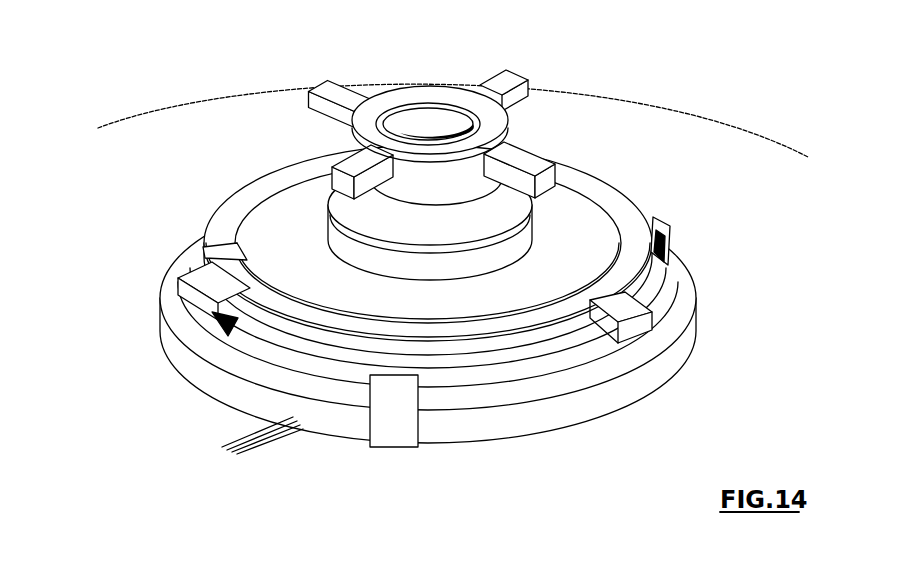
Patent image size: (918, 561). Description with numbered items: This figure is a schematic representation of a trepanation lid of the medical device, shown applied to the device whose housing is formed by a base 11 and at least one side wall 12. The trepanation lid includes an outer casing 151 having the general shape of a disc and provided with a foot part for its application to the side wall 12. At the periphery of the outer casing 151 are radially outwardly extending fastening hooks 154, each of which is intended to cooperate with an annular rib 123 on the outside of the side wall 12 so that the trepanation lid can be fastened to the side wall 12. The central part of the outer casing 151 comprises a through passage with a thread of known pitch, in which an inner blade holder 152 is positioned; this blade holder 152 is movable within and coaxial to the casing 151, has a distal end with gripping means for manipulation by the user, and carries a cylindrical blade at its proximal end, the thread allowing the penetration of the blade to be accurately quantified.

The base 11 is at (453, 141).
The side wall 12 is at (205, 248).
The outer casing 151 is at (515, 298).
The inner blade holder 152 is at (493, 95).
The fastening hooks 154 is at (200, 297).
The annular rib 123 is at (260, 329).